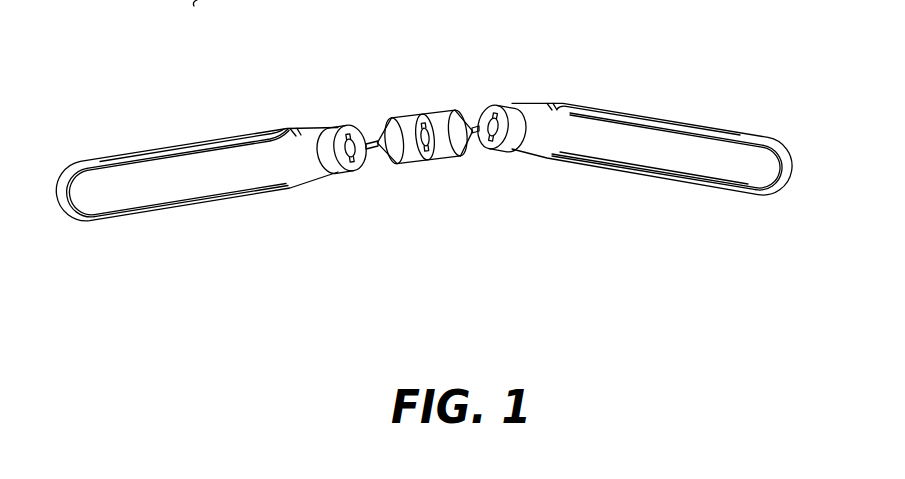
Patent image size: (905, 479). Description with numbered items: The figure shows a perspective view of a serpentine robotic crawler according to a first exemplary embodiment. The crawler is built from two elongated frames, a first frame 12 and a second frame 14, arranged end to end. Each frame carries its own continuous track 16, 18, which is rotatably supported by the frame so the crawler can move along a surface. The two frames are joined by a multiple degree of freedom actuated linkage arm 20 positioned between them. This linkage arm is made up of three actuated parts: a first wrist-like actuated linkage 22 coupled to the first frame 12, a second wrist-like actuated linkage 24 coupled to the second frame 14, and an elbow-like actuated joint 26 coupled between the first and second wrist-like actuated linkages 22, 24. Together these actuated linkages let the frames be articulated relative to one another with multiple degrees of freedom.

The first frame 12 is at (110, 218).
The second frame 14 is at (747, 175).
The continuous track 16 is at (118, 160).
The continuous track 18 is at (697, 130).
The multiple degree of freedom actuated linkage arm 20 is at (405, 145).
The first wrist-like actuated linkage 22 is at (356, 188).
The second wrist-like actuated linkage 24 is at (480, 185).
The elbow-like actuated joint 26 is at (431, 190).